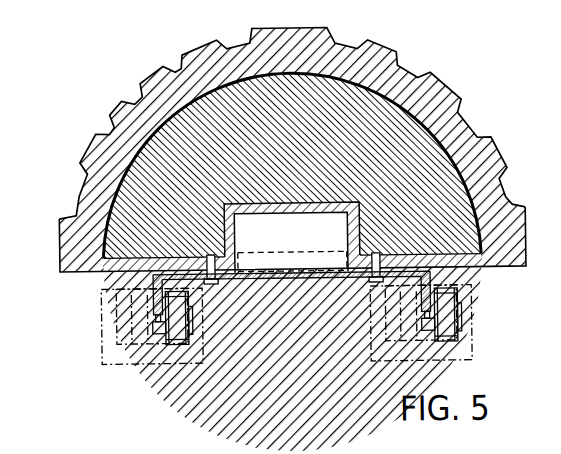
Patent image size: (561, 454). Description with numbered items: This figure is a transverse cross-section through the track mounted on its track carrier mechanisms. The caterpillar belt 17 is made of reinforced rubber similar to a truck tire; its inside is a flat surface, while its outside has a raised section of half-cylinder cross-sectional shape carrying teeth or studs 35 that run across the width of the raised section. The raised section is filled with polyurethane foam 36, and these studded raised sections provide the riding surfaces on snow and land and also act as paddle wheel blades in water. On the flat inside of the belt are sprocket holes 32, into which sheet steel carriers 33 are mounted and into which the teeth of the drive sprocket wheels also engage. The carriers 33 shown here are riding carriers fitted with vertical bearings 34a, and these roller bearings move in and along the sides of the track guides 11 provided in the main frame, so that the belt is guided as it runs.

The track guides 11 is at (102, 299).
The caterpillar belt 17 is at (414, 74).
The sprocket holes 32 is at (303, 238).
The carriers 33 is at (431, 283).
The vertical bearings 34a is at (190, 333).
The teeth or studs 35 is at (81, 157).
The polyurethane foam 36 is at (183, 135).